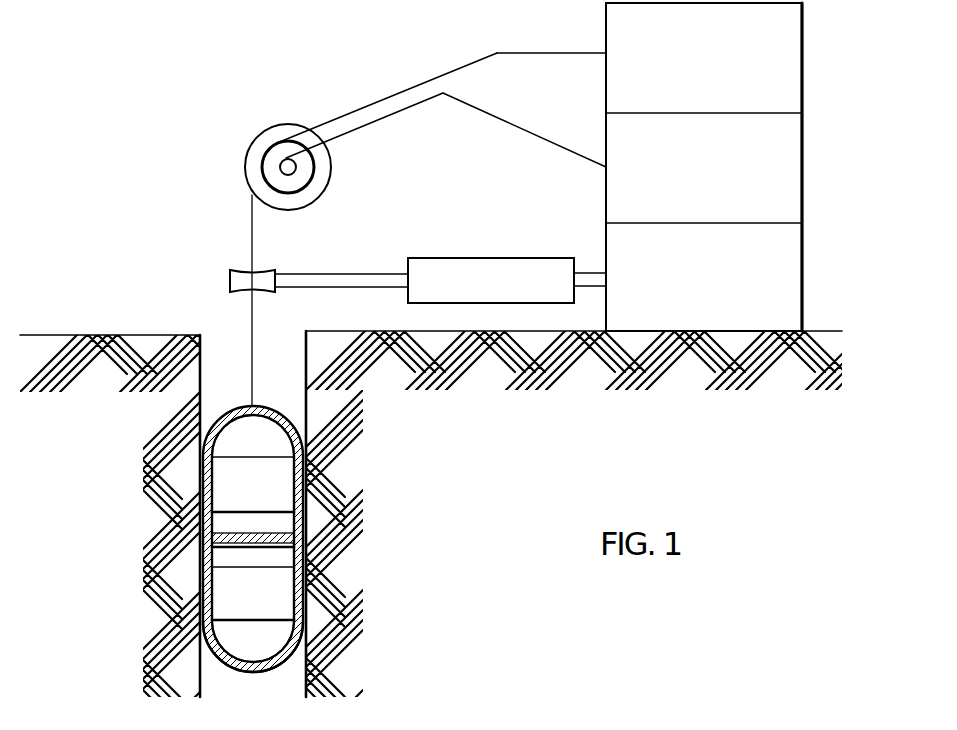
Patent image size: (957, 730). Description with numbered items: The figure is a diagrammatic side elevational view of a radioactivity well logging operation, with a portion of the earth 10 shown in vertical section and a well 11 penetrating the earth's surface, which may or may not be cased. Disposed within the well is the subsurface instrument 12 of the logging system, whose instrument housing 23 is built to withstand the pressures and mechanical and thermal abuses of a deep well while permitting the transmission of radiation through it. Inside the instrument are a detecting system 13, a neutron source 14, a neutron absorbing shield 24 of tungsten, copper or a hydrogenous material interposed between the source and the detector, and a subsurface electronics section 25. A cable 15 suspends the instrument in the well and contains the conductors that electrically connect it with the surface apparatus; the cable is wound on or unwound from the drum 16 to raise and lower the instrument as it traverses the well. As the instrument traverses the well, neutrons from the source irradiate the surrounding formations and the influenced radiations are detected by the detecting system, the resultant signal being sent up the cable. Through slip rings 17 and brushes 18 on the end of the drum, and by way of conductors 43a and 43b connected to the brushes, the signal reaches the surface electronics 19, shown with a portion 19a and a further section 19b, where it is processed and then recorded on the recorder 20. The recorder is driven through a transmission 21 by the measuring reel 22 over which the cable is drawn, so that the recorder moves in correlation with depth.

The earth 10 is at (100, 348).
The well 11 is at (222, 358).
The subsurface instrument 12 is at (256, 406).
The detecting system 13 is at (280, 492).
The neutron source 14 is at (282, 604).
The cable 15 is at (254, 358).
The drum 16 is at (262, 130).
The slip rings 17 is at (298, 168).
The brushes 18 is at (386, 115).
The surface electronics 19 is at (804, 127).
The portion of the surface electronics 19a is at (806, 63).
The surface electronics 19b is at (806, 184).
The recorder 20 is at (793, 275).
The transmission 21 is at (455, 258).
The measuring reel 22 is at (258, 272).
The instrument housing 23 is at (293, 645).
The neutron absorbing shield 24 is at (270, 526).
The subsurface electronics section 25 is at (284, 436).
The conductor 43a is at (527, 50).
The conductor 43b is at (541, 135).